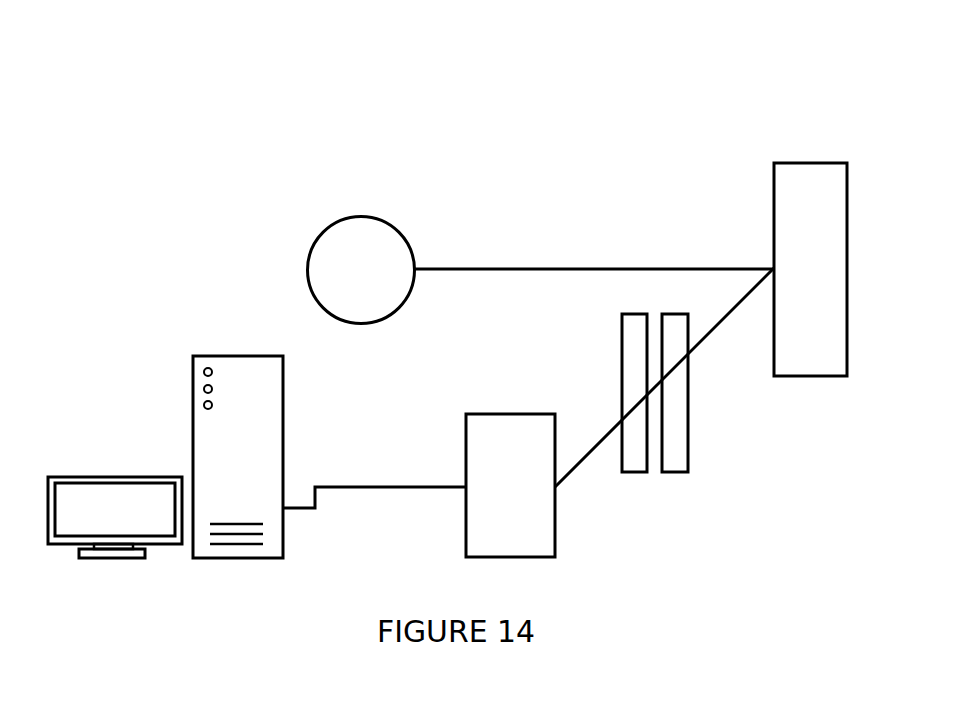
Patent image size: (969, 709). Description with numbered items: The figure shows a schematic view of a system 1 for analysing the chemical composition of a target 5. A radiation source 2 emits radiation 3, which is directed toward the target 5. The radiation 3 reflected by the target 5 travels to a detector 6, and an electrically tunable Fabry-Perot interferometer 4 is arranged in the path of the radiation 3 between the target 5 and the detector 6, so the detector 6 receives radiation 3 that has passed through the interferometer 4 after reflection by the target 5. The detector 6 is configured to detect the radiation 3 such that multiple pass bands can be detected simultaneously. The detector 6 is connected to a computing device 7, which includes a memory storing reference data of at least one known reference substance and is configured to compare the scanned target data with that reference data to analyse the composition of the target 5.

The system 1 is at (248, 163).
The radiation source 2 is at (368, 217).
The radiation 3 is at (465, 267).
The electrically tunable Fabry-Perot interferometer 4 is at (636, 313).
The target 5 is at (808, 162).
The detector 6 is at (465, 453).
The computing device 7 is at (192, 415).